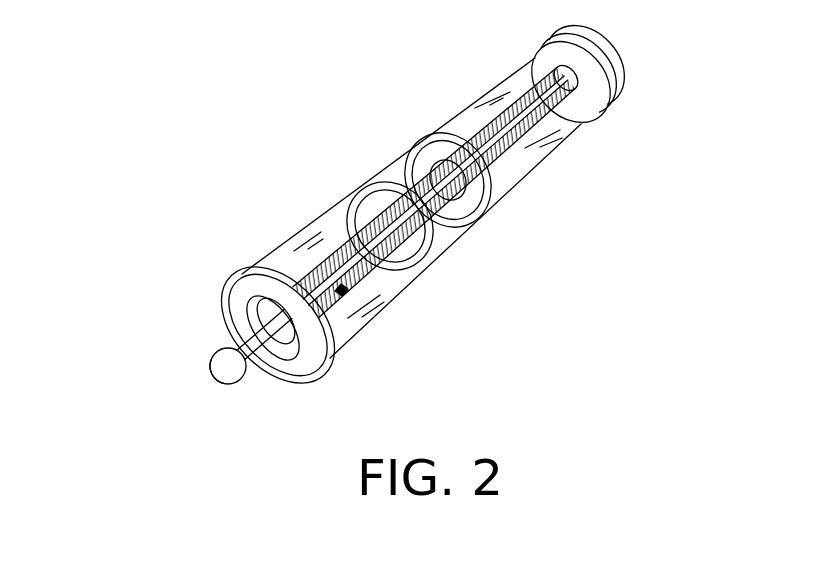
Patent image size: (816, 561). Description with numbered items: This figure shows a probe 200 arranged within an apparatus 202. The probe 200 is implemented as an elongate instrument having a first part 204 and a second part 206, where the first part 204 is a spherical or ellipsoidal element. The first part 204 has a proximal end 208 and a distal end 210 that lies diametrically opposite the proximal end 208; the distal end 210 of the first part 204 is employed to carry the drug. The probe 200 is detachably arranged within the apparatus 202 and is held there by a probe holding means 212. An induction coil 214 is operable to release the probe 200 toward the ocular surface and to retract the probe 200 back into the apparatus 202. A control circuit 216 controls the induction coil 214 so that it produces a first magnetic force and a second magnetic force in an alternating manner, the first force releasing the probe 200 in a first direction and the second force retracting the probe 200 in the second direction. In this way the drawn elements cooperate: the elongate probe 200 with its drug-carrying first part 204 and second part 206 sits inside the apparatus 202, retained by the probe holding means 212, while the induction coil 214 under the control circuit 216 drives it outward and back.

The probe 200 is at (345, 292).
The apparatus 202 is at (571, 133).
The first part 204 is at (222, 379).
The second part 206 is at (488, 176).
The proximal end 208 is at (238, 346).
The distal end 210 is at (209, 362).
The probe holding means 212 is at (517, 78).
The induction coil 214 is at (348, 237).
The control circuit 216 is at (407, 178).